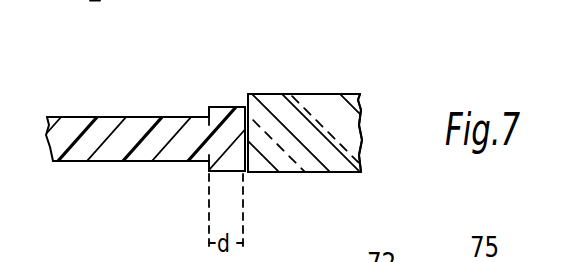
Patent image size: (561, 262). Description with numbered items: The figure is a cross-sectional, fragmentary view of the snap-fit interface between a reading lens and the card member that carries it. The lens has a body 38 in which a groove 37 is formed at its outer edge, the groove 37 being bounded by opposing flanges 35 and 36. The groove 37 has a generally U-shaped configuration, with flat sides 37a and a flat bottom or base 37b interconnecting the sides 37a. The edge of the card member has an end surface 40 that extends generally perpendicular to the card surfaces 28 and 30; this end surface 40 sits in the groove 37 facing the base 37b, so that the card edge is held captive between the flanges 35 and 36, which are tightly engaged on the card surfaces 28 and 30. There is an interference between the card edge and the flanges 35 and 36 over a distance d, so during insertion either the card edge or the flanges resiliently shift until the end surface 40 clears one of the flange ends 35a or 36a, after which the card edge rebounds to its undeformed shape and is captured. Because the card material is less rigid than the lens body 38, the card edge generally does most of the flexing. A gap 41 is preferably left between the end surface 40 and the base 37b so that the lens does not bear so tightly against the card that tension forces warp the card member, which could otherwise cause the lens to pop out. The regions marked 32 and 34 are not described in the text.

The card surface 28 is at (88, 117).
The card surface 30 is at (72, 162).
The second plate 32 is at (340, 94).
The broken edge of second plate 34 is at (332, 172).
The flange 35 is at (227, 107).
The flange end 35a is at (214, 107).
The flange 36 is at (222, 173).
The flange end 36a is at (212, 171).
The groove 37 is at (246, 164).
The flat sides 37a is at (209, 112).
The base 37b is at (251, 104).
The lens body 38 is at (338, 115).
The end surface 40 is at (252, 165).
The gap 41 is at (248, 124).